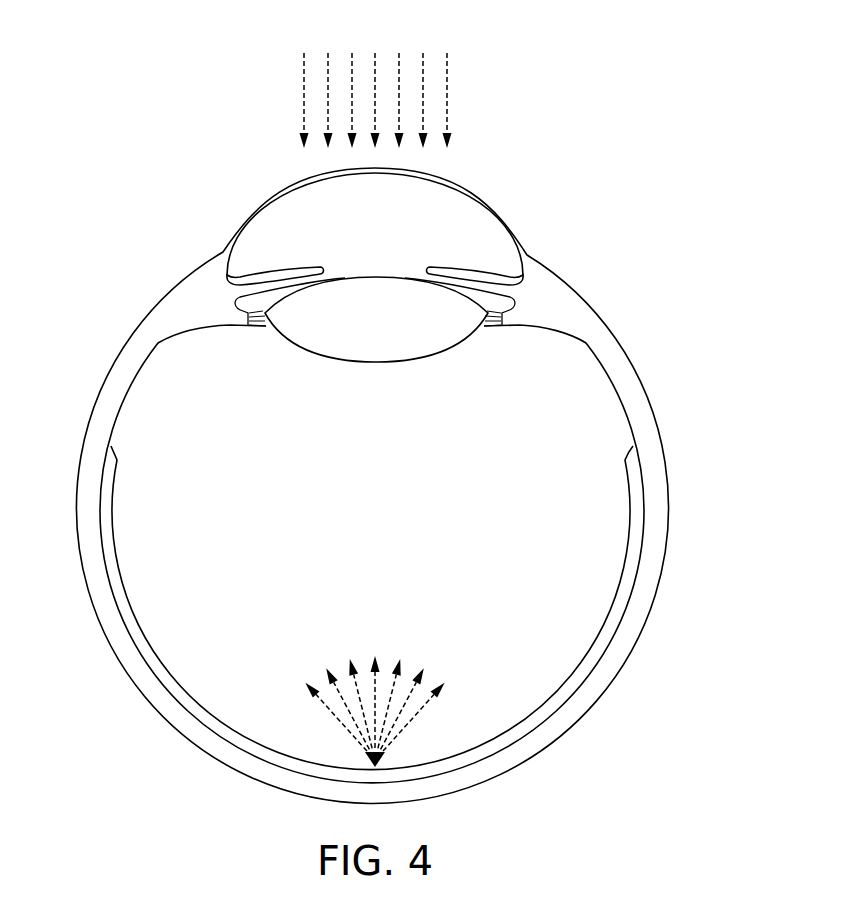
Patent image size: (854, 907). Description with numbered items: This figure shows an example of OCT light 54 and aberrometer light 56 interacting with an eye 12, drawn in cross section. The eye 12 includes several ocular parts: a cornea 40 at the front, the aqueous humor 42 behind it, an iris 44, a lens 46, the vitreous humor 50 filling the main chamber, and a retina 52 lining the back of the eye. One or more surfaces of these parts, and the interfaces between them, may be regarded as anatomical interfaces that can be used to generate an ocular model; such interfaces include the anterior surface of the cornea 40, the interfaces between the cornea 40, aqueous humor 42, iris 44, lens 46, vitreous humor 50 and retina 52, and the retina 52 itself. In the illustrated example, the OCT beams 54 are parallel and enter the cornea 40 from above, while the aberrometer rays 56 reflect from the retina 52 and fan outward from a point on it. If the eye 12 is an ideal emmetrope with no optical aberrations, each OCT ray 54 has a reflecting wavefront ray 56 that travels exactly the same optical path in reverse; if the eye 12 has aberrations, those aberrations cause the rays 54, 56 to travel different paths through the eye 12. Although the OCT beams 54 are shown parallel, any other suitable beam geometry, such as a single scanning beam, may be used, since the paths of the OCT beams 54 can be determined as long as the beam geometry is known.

The eye 12 is at (110, 181).
The cornea 40 is at (498, 210).
The aqueous humor 42 is at (390, 247).
The iris 44 is at (513, 296).
The lens 46 is at (373, 356).
The vitreous humor 50 is at (390, 567).
The retina 52 is at (616, 601).
The OCT light 54 is at (303, 87).
The aberrometer light 56 is at (337, 721).